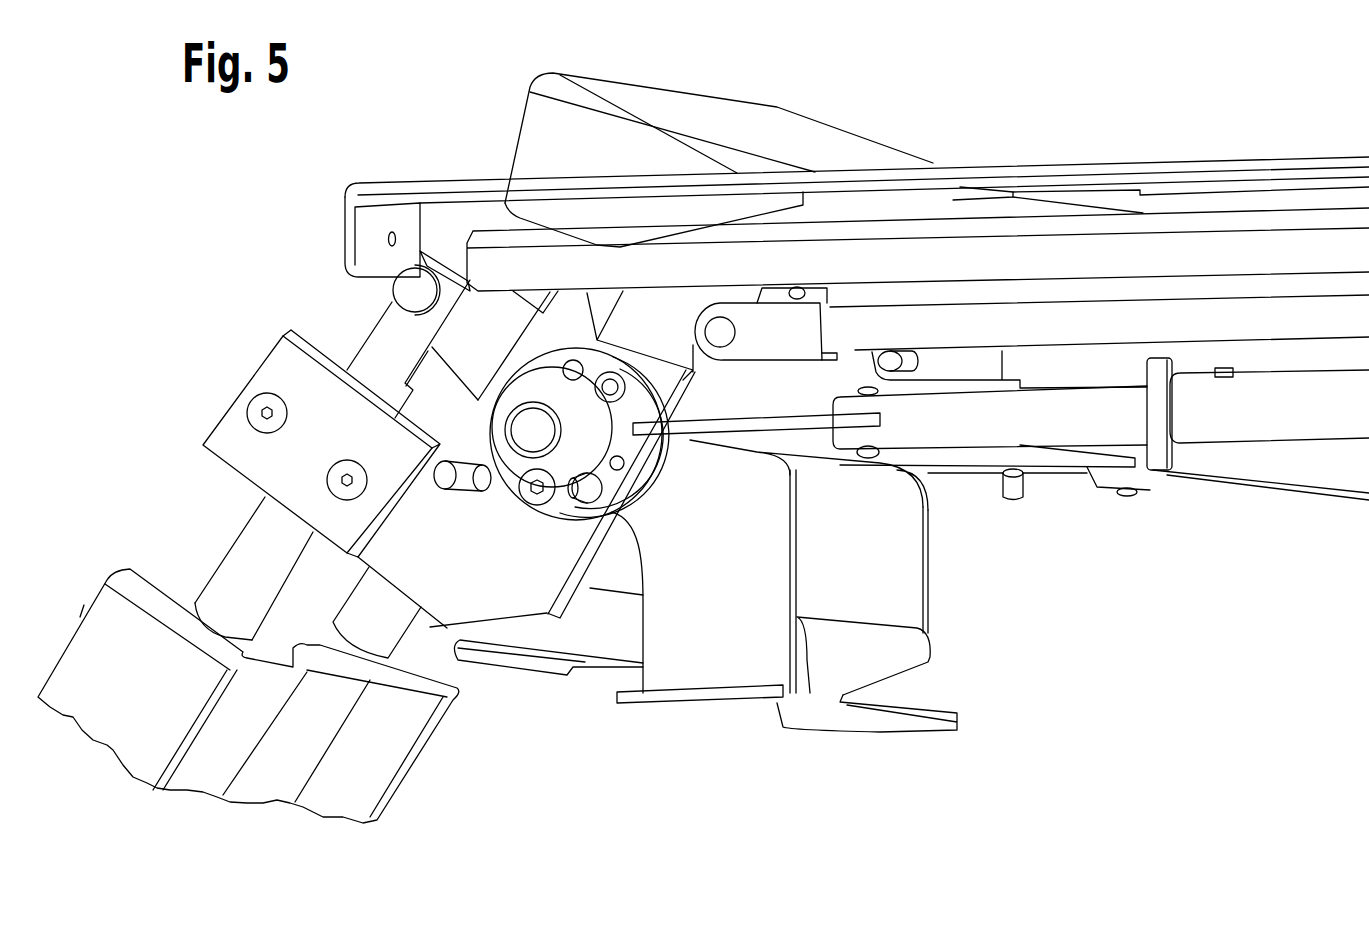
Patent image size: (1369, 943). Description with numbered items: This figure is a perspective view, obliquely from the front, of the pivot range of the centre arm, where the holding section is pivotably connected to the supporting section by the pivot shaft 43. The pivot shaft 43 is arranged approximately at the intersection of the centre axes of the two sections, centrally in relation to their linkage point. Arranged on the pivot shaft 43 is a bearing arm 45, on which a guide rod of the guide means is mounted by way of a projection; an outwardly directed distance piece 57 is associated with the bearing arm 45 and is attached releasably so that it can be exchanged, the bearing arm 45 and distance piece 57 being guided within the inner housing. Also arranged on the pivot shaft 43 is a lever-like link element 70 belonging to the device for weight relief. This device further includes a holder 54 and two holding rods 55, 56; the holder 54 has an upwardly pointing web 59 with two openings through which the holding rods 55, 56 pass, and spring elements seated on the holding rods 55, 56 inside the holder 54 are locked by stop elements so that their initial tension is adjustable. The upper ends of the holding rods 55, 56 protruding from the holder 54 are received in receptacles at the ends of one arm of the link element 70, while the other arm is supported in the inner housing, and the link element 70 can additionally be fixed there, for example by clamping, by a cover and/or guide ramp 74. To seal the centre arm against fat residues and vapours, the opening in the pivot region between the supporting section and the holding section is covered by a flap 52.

The flap 52 is at (793, 137).
The link element 70 is at (477, 357).
The distance piece 57 is at (250, 453).
The holding rod 55 is at (267, 553).
The web 59 is at (283, 623).
The holding rod 56 is at (362, 625).
The pivot shaft 43 is at (533, 432).
The bearing arm 45 is at (532, 565).
The holder 54 is at (377, 760).
The cover and/or guide ramp 74 is at (860, 640).